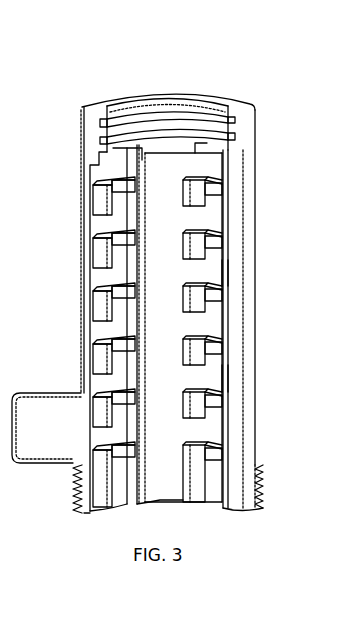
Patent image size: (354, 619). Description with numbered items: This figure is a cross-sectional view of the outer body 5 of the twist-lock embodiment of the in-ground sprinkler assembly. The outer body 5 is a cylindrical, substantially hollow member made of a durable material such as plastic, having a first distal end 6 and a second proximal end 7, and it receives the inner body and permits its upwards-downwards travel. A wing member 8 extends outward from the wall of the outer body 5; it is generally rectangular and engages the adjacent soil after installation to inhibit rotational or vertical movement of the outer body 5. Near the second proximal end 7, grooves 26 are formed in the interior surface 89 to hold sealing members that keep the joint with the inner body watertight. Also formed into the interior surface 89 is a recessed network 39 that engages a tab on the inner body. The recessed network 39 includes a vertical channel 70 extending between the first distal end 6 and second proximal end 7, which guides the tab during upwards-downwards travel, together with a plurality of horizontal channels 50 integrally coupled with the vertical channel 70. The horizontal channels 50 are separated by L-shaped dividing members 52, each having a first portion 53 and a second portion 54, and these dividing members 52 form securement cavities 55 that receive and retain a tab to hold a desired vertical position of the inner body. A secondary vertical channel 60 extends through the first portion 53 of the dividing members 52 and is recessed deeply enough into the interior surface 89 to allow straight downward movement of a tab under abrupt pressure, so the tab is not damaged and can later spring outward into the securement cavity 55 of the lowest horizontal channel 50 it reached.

The outer body 5 is at (257, 305).
The first distal end 6 is at (270, 492).
The second proximal end 7 is at (262, 108).
The wing member 8 is at (40, 412).
The groove 26 is at (100, 124).
The recessed network 39 is at (172, 175).
The horizontal channel 50 is at (213, 273).
The dividing member 52 is at (212, 296).
The first portion 53 is at (213, 247).
The second portion 54 is at (190, 243).
The securement cavity 55 is at (212, 206).
The secondary vertical channel 60 is at (212, 165).
The vertical channel 70 is at (162, 492).
The interior surface 89 is at (173, 143).